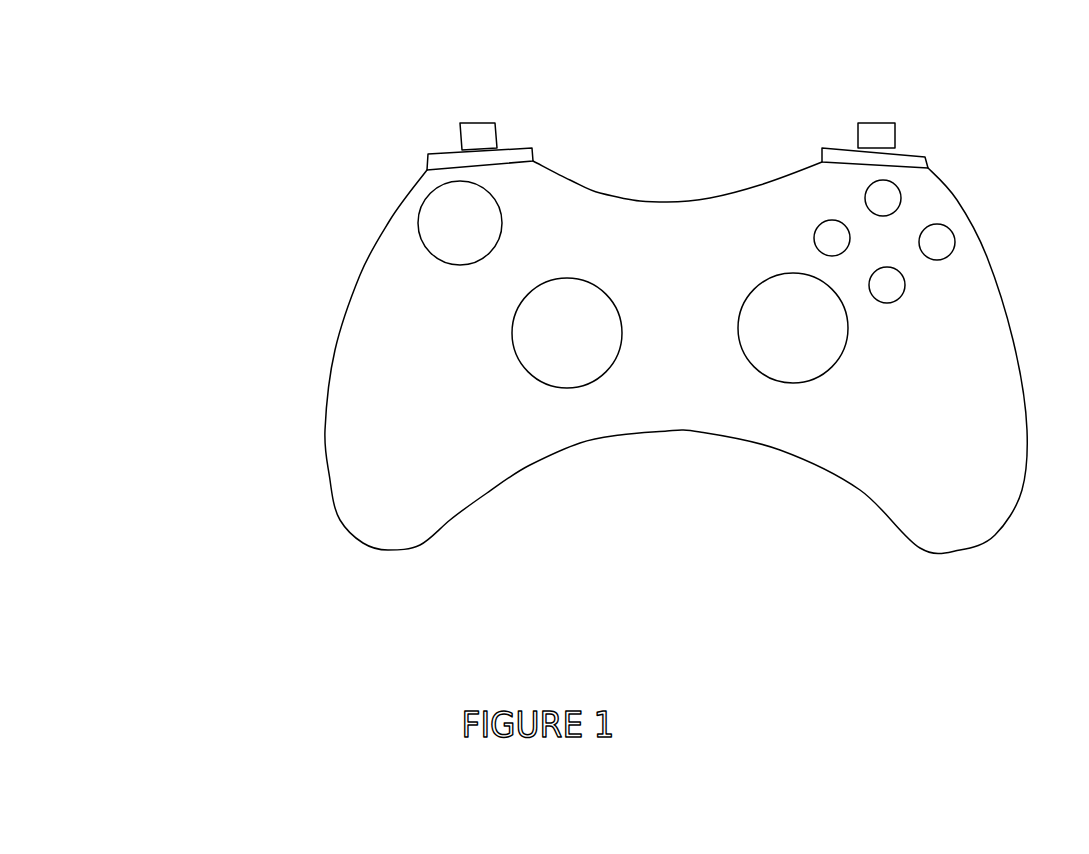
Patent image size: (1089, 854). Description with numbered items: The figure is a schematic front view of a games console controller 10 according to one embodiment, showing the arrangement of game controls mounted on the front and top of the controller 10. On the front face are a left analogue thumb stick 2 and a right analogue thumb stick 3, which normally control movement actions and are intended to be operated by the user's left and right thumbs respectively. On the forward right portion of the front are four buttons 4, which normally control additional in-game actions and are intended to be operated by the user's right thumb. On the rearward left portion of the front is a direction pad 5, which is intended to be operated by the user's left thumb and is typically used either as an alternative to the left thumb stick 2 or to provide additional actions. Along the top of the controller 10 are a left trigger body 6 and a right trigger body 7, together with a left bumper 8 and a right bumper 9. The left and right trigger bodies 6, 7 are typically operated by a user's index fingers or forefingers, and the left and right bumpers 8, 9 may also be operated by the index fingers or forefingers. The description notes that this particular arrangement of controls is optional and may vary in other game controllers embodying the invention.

The controller 10 is at (300, 337).
The left analogue thumb stick 2 is at (417, 228).
The right analogue thumb stick 3 is at (780, 377).
The buttons 4 is at (883, 242).
The direction pad 5 is at (575, 382).
The left trigger body 6 is at (473, 127).
The right trigger body 7 is at (878, 130).
The left bumper 8 is at (428, 157).
The right bumper 9 is at (832, 147).